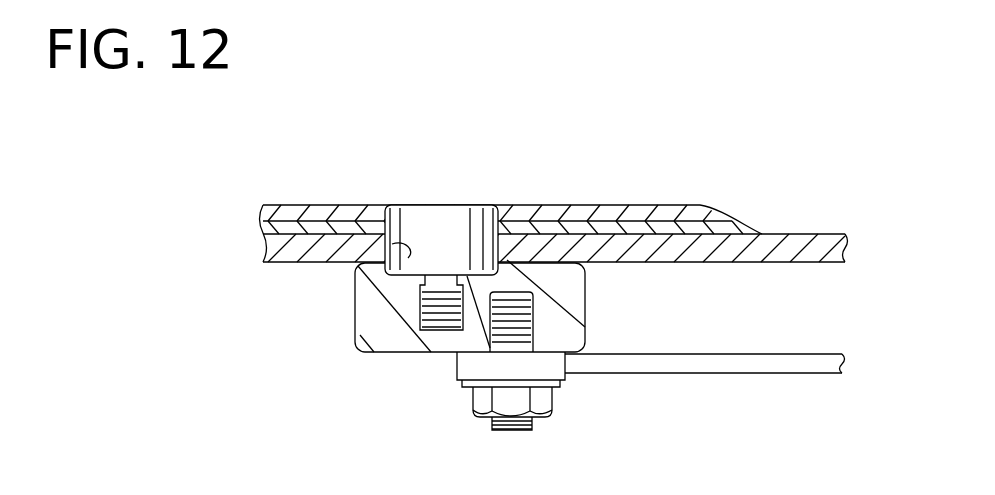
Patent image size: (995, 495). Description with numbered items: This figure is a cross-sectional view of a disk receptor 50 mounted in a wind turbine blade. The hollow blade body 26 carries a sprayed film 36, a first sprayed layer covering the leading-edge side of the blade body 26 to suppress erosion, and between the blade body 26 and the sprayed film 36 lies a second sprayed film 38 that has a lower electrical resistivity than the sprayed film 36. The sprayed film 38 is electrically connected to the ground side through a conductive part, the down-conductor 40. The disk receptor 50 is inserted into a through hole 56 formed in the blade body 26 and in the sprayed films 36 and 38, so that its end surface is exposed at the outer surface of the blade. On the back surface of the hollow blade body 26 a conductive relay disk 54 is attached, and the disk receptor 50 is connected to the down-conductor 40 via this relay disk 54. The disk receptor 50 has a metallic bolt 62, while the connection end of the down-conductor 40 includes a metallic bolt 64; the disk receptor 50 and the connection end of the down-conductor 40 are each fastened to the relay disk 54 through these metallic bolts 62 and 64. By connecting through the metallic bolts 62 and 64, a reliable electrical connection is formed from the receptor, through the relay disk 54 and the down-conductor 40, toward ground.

The blade body 26 is at (810, 236).
The sprayed film 36 is at (570, 205).
The sprayed film 38 is at (747, 236).
The down-conductor 40 is at (622, 366).
The disk receptor 50 is at (415, 213).
The relay disk 54 is at (355, 332).
The through hole 56 is at (408, 258).
The metallic bolt 62 is at (450, 320).
The metallic bolt 64 is at (527, 318).